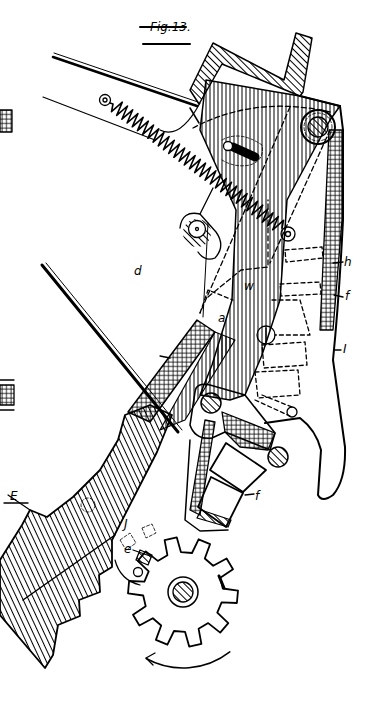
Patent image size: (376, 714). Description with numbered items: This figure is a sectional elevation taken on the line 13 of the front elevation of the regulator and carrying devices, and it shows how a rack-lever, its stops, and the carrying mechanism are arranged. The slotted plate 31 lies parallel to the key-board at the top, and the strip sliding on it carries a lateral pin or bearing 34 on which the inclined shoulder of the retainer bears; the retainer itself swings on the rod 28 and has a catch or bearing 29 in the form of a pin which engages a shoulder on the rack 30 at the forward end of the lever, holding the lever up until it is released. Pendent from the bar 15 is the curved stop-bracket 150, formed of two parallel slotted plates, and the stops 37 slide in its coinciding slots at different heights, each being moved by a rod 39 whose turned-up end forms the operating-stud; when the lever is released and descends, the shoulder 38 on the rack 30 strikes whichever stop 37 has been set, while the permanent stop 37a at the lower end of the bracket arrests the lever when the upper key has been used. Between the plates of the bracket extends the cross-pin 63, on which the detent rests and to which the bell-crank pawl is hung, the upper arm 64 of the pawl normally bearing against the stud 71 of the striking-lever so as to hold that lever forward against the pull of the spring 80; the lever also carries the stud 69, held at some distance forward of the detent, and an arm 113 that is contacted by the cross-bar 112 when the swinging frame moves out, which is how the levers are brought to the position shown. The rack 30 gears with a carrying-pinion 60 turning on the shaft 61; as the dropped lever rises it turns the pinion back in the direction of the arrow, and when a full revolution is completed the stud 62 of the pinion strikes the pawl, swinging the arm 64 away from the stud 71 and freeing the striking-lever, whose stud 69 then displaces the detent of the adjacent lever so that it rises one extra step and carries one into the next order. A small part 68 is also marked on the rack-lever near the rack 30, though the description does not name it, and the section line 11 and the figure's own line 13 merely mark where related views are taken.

The slotted plate 31 is at (103, 70).
The spring 80 is at (172, 165).
The bar 15 is at (251, 78).
The section line 13 is at (250, 240).
The lateral pin or bearing 34 is at (229, 142).
The section line 11 is at (265, 148).
The curved stop-bracket 150 is at (332, 103).
The rod 28 is at (337, 124).
The catch or bearing 29 is at (190, 248).
The rod 39 is at (112, 347).
The cross-pin 63 is at (231, 417).
The upper arm 64 is at (248, 431).
The stop 37 is at (228, 473).
The permanent stop 37a is at (238, 521).
The cross-bar 112 is at (282, 464).
The arm 113 is at (328, 487).
The shoulder 38 is at (289, 322).
The stud 69 is at (276, 338).
The stud or bearing 71 is at (296, 407).
The rack 30 is at (74, 491).
The pin 68 is at (96, 498).
The stud 62 is at (134, 558).
The carrying-pinion 60 is at (240, 603).
The shaft 61 is at (190, 590).